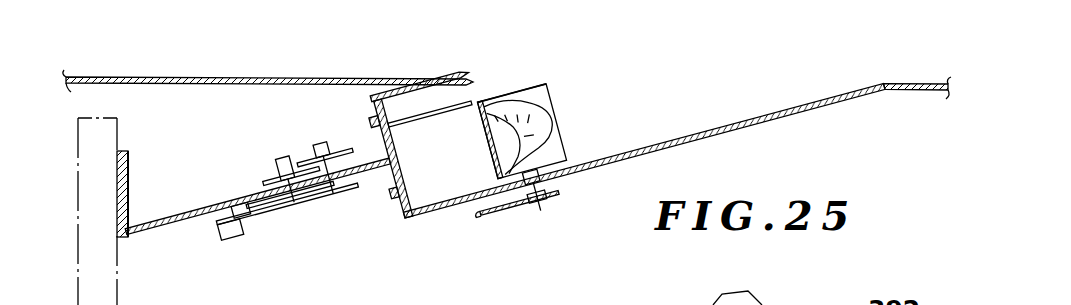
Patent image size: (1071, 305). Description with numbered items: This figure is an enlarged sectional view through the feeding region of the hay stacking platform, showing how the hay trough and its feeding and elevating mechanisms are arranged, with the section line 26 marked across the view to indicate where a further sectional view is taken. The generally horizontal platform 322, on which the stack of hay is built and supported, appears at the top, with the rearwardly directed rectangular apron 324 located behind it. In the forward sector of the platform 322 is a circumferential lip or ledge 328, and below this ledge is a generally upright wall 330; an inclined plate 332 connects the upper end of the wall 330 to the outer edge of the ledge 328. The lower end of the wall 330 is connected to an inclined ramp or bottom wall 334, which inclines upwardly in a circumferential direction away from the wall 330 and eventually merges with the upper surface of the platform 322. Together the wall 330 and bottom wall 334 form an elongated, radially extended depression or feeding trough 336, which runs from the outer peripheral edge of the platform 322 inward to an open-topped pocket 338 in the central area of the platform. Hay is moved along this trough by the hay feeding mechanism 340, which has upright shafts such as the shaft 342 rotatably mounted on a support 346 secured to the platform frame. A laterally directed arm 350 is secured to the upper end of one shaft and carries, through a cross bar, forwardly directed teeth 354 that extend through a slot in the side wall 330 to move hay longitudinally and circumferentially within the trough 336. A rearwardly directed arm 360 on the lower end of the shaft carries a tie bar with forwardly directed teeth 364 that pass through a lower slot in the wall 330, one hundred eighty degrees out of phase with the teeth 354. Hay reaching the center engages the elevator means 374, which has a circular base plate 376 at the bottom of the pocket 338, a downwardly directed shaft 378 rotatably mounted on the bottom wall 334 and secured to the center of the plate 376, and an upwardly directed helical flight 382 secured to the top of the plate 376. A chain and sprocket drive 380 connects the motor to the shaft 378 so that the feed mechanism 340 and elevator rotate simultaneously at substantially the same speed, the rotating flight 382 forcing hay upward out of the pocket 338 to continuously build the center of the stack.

The section line 26— 26 is at (348, 125).
The platform 322 is at (256, 76).
The apron 324 is at (488, 164).
The ledge 328 is at (463, 86).
The wall 330 is at (398, 217).
The inclined plate 332 is at (395, 97).
The bottom wall 334 is at (758, 116).
The feeding trough 336 is at (724, 119).
The pocket 338 is at (520, 92).
The hay feeding mechanism 340 is at (207, 242).
The upright shaft 342 is at (283, 165).
The support 346 is at (195, 213).
The laterally directed arm 350 is at (318, 156).
The teeth 354 is at (437, 118).
The rearwardly directed arm 360 is at (240, 206).
The teeth 364 is at (318, 208).
The elevator means 374 is at (562, 96).
The base plate 376 is at (553, 170).
The shaft 378 is at (540, 209).
The chain and sprocket drive 380 is at (502, 216).
The helical flight 382 is at (540, 128).